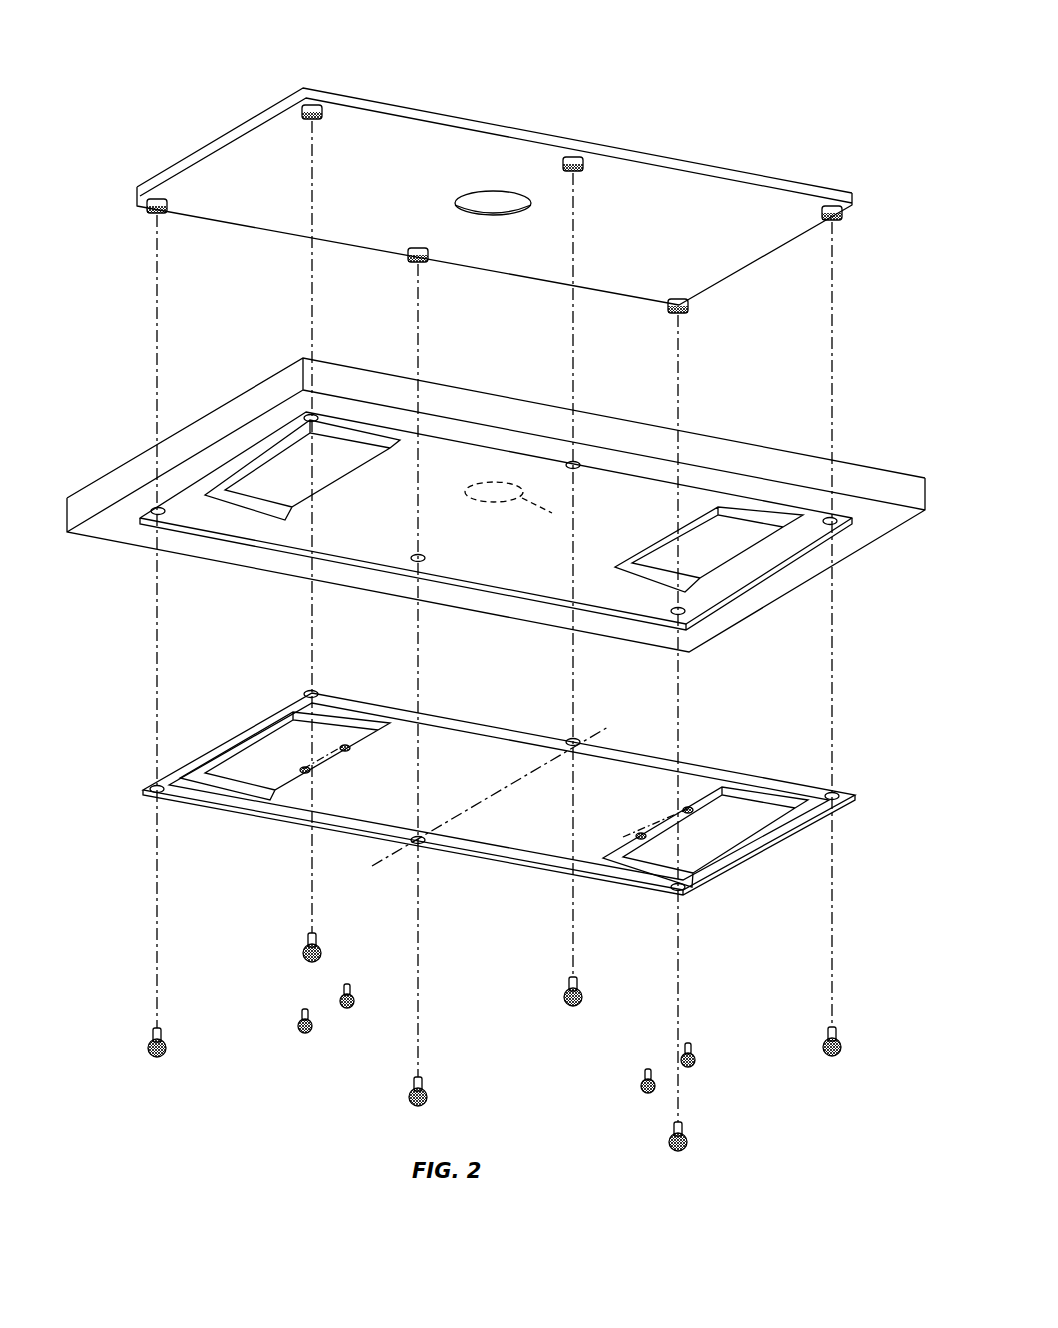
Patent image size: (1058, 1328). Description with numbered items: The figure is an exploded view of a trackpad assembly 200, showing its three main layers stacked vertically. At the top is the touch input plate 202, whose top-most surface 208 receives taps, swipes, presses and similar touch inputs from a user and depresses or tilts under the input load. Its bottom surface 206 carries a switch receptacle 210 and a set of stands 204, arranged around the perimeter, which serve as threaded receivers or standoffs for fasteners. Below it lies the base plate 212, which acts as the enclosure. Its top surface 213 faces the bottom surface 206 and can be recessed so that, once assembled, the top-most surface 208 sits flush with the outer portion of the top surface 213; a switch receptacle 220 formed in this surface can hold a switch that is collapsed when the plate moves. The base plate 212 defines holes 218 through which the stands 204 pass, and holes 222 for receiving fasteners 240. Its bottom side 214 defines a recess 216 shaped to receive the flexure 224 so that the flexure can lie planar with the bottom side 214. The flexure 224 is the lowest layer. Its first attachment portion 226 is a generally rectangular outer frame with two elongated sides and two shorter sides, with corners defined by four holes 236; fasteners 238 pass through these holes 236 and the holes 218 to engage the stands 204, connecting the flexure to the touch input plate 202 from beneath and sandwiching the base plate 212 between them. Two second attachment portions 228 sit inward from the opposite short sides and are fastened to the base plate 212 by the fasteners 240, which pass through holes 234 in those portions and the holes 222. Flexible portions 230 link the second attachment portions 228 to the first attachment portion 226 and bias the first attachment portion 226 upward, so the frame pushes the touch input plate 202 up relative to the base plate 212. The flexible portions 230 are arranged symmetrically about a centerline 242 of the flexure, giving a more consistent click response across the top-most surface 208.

The trackpad assembly 200 is at (188, 36).
The touch input plate 202 is at (824, 166).
The stands 204 is at (310, 105).
The bottom surface 206 is at (378, 135).
The top-most surface 208 is at (499, 104).
The switch receptacle 210 is at (505, 198).
The base plate 212 is at (893, 467).
The top surface 213 is at (782, 445).
The bottom side 214 is at (655, 505).
The recess 216 is at (750, 570).
The holes 218 is at (305, 415).
The switch receptacle 220 is at (530, 506).
The holes 222 is at (318, 487).
The flexure 224 is at (770, 870).
The first attachment portion 226 is at (357, 832).
The second attachment portions 228 is at (355, 765).
The flexible portions 230 is at (760, 786).
The holes 234 is at (345, 748).
The holes 236 is at (308, 692).
The fasteners 238 is at (308, 940).
The fasteners 240 is at (302, 1016).
The centerline 242 is at (490, 796).